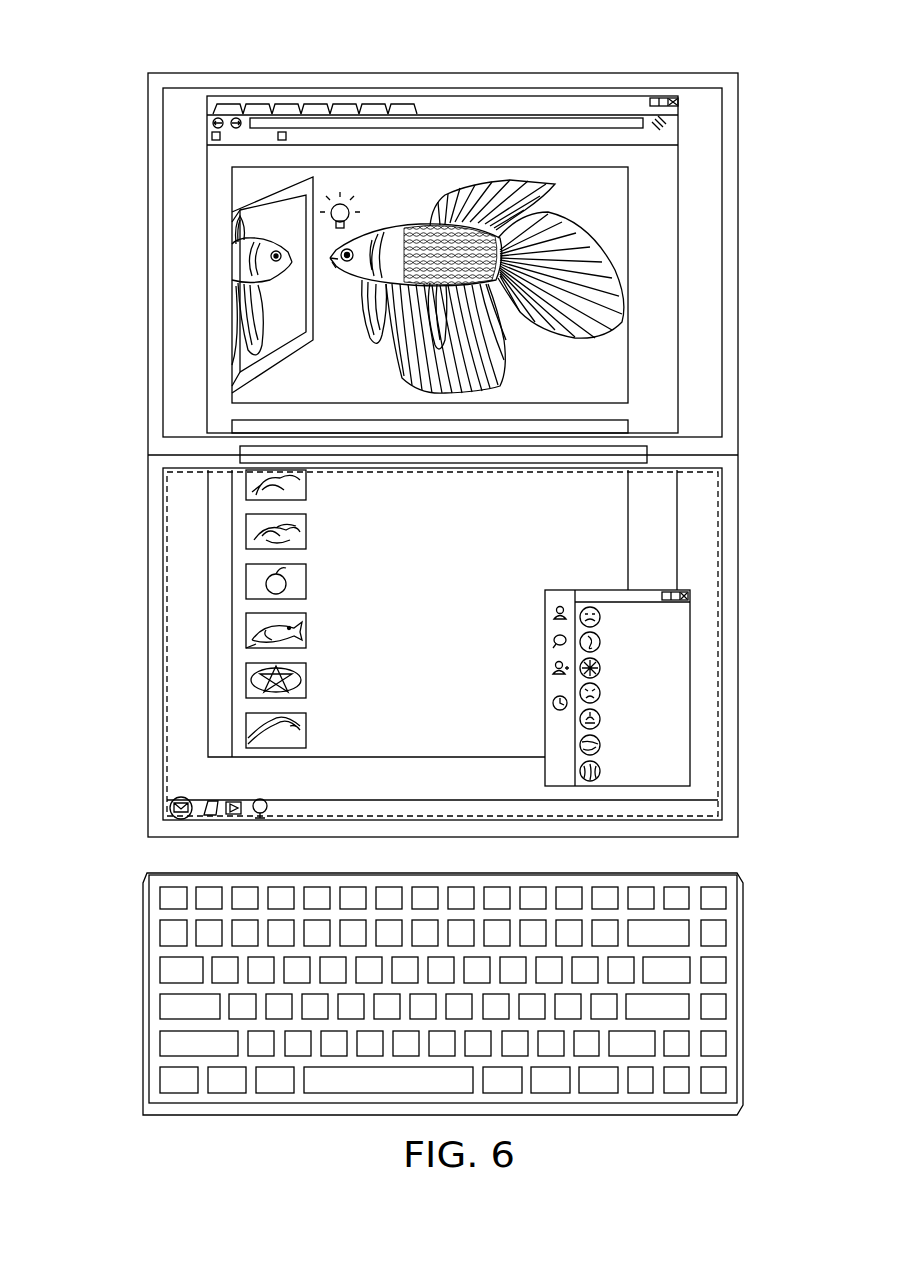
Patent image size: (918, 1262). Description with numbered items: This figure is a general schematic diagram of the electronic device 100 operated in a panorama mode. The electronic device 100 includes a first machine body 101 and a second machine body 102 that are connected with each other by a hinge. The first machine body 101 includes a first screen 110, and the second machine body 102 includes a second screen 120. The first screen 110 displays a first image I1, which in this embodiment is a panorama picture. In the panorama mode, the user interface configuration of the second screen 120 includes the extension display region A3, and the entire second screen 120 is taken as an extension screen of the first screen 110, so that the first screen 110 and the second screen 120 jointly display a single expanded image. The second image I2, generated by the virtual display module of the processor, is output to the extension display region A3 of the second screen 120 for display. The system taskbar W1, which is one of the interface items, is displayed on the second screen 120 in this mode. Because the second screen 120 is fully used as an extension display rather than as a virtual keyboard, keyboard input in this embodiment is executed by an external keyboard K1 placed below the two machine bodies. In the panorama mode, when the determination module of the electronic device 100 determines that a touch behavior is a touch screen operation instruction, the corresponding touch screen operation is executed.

The electronic device 100 is at (94, 78).
The first machine body 101 is at (740, 297).
The first screen 110 is at (722, 250).
The first image I1 is at (187, 96).
The second machine body 102 is at (740, 692).
The second screen 120 is at (726, 642).
The second image I2 is at (181, 544).
The extension display region A3 is at (718, 598).
The system taskbar W1 is at (172, 803).
The external keyboard K1 is at (137, 993).